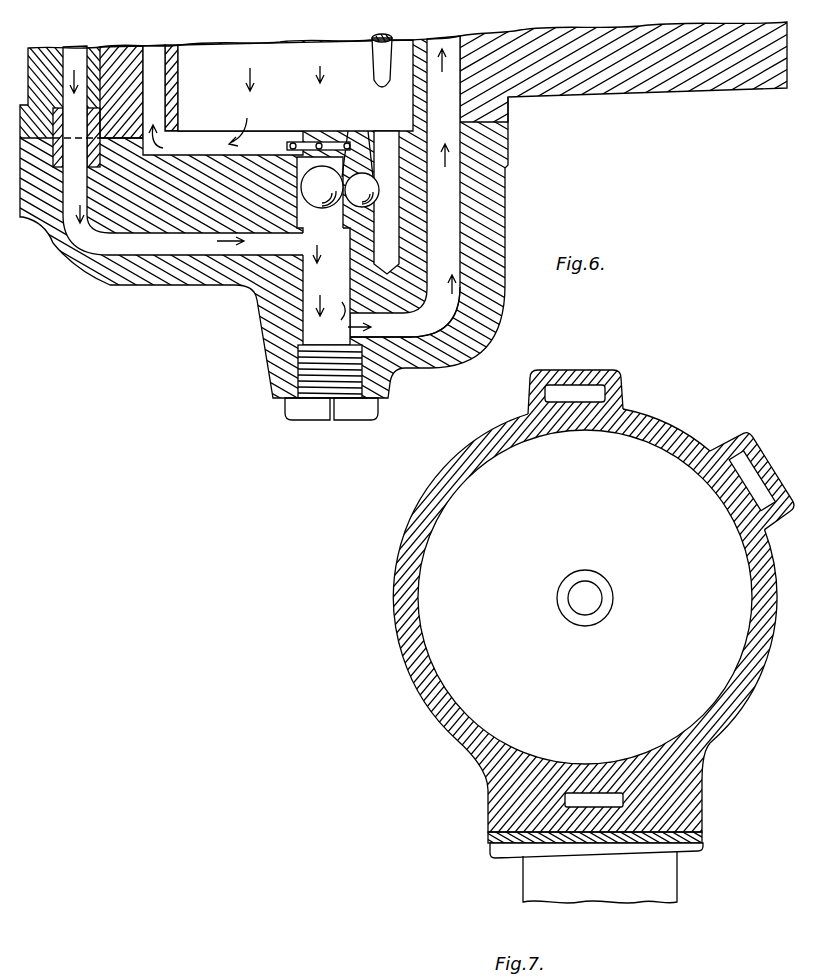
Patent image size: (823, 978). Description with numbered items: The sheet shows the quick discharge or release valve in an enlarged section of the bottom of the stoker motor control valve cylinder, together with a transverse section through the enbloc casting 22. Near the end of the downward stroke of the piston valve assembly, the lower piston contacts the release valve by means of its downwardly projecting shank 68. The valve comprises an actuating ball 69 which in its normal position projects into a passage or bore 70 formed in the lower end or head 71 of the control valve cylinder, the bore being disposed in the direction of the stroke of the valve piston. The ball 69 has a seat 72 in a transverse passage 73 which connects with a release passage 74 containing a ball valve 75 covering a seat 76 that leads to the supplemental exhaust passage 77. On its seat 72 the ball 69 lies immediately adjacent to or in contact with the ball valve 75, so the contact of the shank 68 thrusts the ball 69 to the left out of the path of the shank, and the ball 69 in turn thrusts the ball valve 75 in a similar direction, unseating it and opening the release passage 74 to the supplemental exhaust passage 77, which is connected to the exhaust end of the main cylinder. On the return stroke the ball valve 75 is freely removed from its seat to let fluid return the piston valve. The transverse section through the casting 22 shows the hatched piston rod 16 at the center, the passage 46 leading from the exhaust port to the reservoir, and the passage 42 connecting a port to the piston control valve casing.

In FIG. 6, the downwardly projecting shank 68 is at (372, 62).
In FIG. 6, the actuating ball 69 is at (378, 197).
In FIG. 6, the passage or bore 70 is at (389, 223).
In FIG. 6, the lower end or head of the control valve cylinder 71 is at (143, 270).
In FIG. 6, the seat 72 is at (357, 208).
In FIG. 6, the transverse passage 73 is at (349, 175).
In FIG. 6, the release passage 74 is at (306, 167).
In FIG. 6, the ball valve 75 is at (326, 183).
In FIG. 6, the seat 76 is at (302, 240).
In FIG. 6, the supplemental exhaust passage 77 is at (403, 333).
In FIG. 7, the supplemental exhaust passage 77 is at (598, 800).
In FIG. 7, the passage 42 is at (591, 383).
In FIG. 7, the passage 46 is at (758, 470).
In FIG. 7, the piston rod 16 is at (601, 600).
In FIG. 7, the casting 22 is at (677, 779).